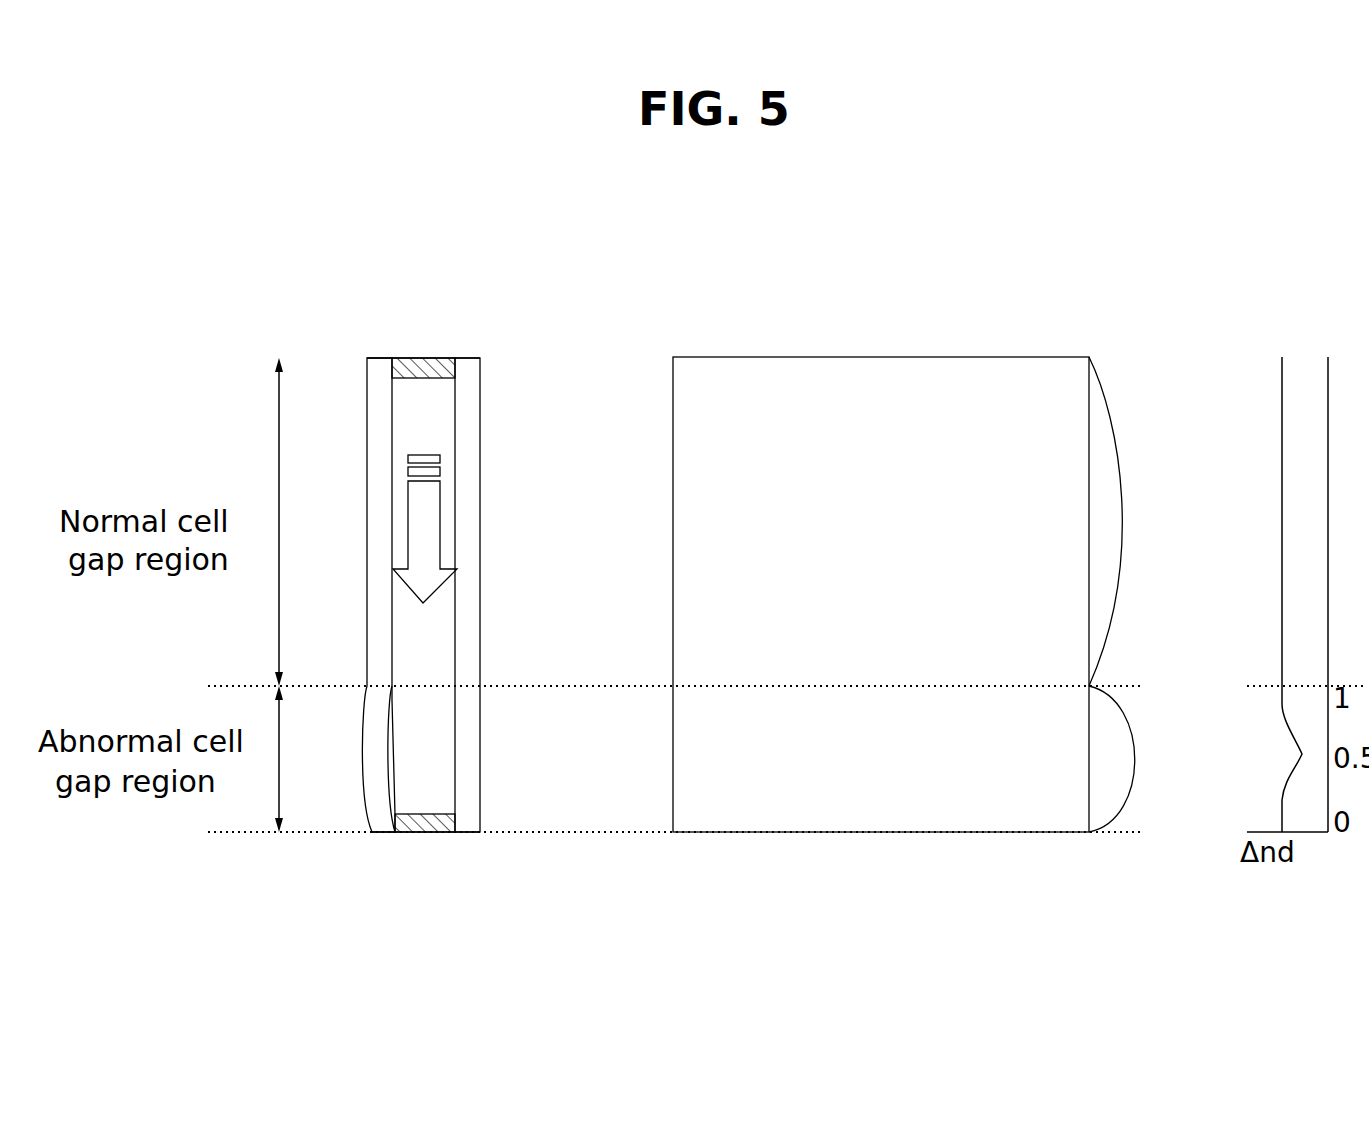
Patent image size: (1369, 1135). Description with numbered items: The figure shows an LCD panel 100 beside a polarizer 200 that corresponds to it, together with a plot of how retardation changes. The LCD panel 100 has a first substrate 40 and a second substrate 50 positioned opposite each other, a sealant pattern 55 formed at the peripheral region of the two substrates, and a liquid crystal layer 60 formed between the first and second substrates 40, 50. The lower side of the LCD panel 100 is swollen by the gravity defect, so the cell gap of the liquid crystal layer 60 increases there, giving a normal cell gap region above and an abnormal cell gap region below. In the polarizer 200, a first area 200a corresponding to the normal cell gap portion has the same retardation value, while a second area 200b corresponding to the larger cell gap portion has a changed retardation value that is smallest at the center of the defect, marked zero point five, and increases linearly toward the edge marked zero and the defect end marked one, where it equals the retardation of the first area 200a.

The first substrate 40 is at (380, 370).
The second substrate 50 is at (466, 370).
The sealant pattern 55 is at (430, 843).
The liquid crystal layer 60 is at (440, 430).
The LCD panel 100 is at (505, 370).
The polarizer 200 is at (1052, 286).
The first area of the polarizer 200a is at (1153, 521).
The second area of the polarizer 200b is at (1153, 759).